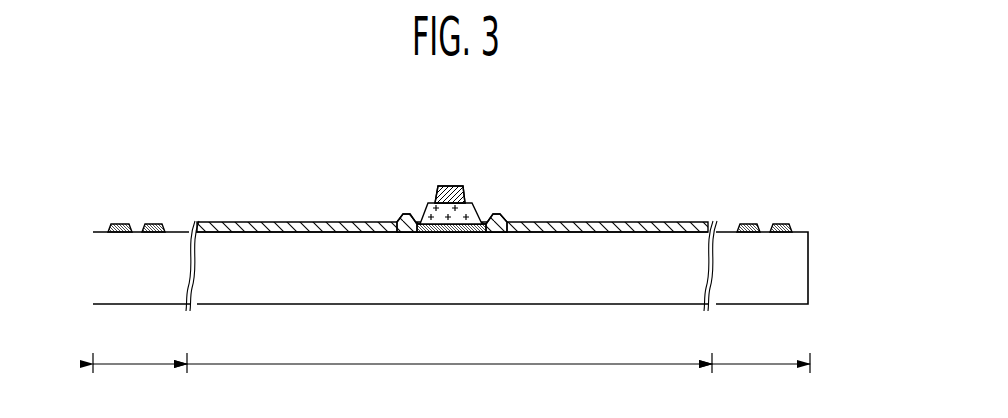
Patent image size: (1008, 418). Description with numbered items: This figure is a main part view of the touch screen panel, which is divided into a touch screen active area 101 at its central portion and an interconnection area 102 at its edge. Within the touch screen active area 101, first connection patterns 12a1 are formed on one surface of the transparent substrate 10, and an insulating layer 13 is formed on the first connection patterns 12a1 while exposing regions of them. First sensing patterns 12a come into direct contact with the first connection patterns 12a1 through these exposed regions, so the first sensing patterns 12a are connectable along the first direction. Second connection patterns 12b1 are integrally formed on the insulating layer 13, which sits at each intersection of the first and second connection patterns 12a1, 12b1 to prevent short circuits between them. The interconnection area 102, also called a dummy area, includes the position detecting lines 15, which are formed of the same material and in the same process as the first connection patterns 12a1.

The transparent substrate 10 is at (805, 267).
The first sensing patterns 12a is at (309, 228).
The first connection patterns 12a1 is at (486, 217).
The second connection patterns 12b1 is at (452, 186).
The insulating layer 13 is at (432, 217).
The position detecting lines 15 is at (788, 227).
The touch screen active area 101 is at (449, 382).
The interconnection area 102 is at (451, 377).